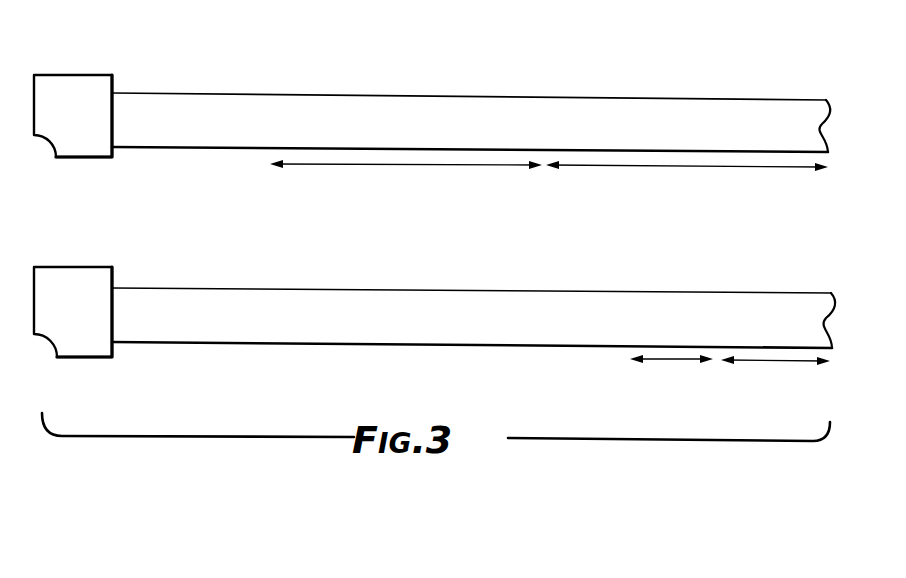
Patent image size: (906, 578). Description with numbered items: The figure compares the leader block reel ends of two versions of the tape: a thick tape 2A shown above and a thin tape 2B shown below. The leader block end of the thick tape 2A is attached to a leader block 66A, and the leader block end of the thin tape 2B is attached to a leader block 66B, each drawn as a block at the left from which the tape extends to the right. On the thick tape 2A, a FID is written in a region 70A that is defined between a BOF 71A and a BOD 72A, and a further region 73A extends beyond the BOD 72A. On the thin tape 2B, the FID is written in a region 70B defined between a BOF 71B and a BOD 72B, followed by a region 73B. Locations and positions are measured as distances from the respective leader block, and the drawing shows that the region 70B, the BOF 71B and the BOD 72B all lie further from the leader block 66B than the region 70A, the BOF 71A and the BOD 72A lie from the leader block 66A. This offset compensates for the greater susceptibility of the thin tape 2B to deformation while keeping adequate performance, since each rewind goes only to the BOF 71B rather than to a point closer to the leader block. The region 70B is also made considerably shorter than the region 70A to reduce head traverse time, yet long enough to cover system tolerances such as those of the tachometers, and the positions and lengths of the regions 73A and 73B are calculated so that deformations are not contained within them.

The leader block 66A is at (78, 90).
The thick tape 2A is at (178, 104).
The BOF 71A is at (268, 88).
The BOD 72A is at (542, 88).
The region 70A is at (403, 167).
The region 73A is at (677, 168).
The leader block 66B is at (85, 284).
The thin tape 2B is at (188, 300).
The BOF 71B is at (637, 282).
The BOD 72B is at (707, 282).
The region 70B is at (662, 362).
The region 73B is at (770, 363).